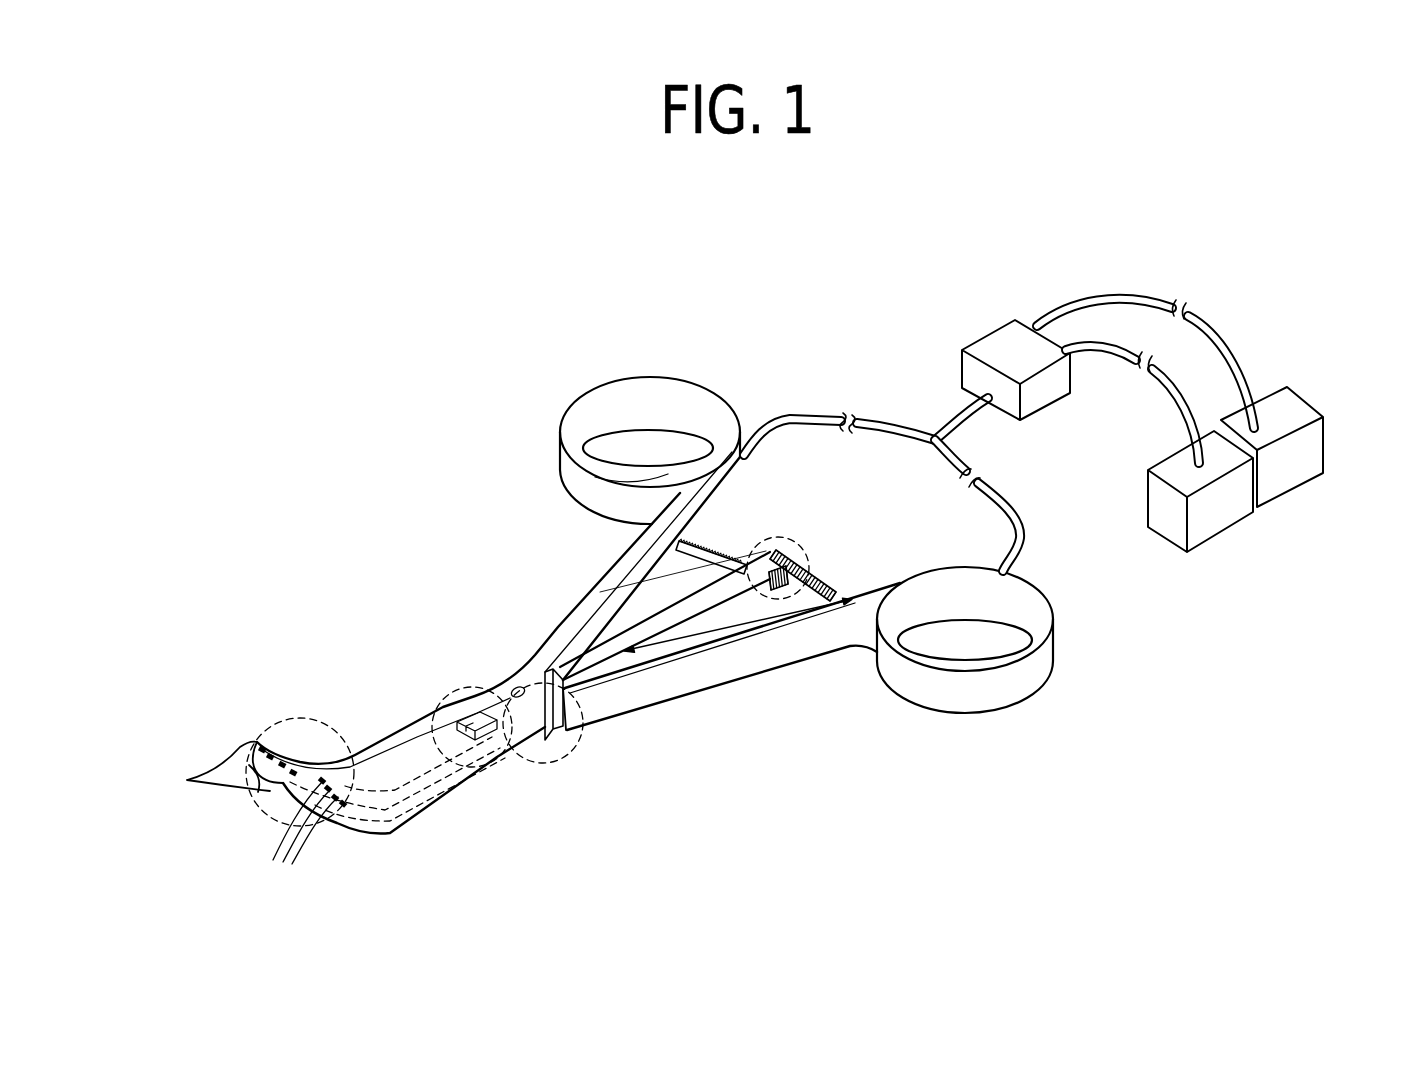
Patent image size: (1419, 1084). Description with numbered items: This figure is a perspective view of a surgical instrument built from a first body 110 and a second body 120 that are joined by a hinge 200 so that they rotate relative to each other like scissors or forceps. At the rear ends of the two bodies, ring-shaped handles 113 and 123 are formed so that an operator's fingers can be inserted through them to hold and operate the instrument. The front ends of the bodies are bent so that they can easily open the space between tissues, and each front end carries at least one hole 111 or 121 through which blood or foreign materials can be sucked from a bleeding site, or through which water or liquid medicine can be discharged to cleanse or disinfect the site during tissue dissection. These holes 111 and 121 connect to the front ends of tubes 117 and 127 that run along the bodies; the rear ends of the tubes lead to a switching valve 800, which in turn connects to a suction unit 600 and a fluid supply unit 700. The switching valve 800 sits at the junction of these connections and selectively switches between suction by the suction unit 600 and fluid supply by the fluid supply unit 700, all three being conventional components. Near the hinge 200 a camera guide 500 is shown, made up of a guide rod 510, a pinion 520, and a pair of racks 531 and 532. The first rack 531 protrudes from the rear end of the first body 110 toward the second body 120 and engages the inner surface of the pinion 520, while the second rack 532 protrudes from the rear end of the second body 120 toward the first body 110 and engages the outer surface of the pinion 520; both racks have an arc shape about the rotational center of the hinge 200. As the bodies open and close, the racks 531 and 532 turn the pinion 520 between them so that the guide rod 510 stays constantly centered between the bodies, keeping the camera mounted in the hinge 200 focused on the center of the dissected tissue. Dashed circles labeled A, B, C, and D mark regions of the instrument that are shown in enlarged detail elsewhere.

The first body 110 is at (570, 598).
The hole 111 is at (282, 813).
The handle 113 is at (628, 397).
The tube 117 is at (817, 418).
The second body 120 is at (682, 712).
The hole 121 is at (190, 779).
The handle 123 is at (972, 700).
The tube 127 is at (362, 762).
The hinge 200 is at (535, 742).
The camera guide 500 is at (768, 528).
The guide rod 510 is at (693, 607).
The pinion 520 is at (790, 609).
The first rack 531 is at (750, 550).
The second rack 532 is at (822, 584).
The suction unit 600 is at (1217, 513).
The fluid supply unit 700 is at (1298, 470).
The switching valve 800 is at (998, 336).
The detail region A is at (273, 718).
The detail region B is at (442, 720).
The detail region C is at (580, 743).
The detail region D is at (803, 538).